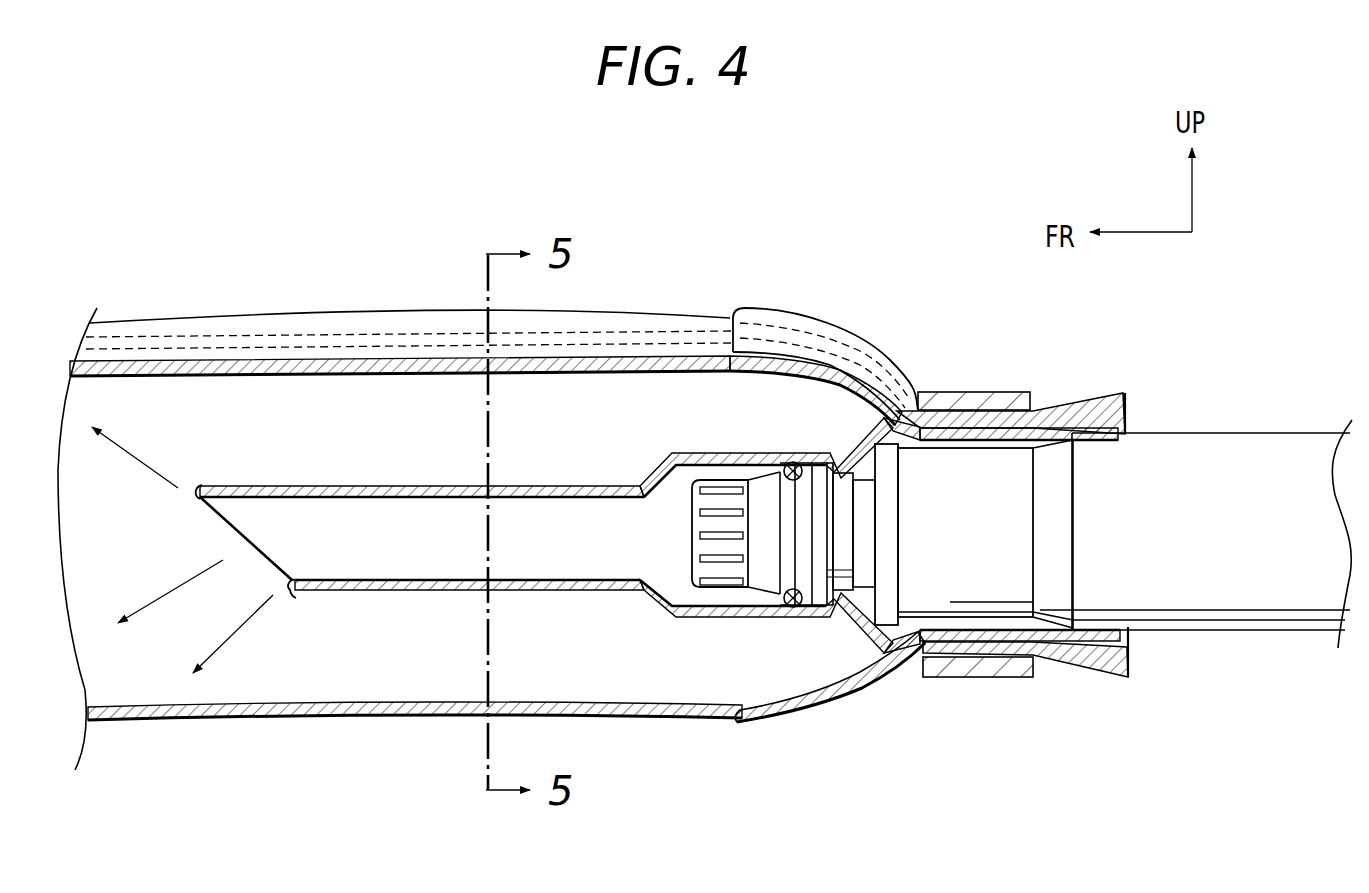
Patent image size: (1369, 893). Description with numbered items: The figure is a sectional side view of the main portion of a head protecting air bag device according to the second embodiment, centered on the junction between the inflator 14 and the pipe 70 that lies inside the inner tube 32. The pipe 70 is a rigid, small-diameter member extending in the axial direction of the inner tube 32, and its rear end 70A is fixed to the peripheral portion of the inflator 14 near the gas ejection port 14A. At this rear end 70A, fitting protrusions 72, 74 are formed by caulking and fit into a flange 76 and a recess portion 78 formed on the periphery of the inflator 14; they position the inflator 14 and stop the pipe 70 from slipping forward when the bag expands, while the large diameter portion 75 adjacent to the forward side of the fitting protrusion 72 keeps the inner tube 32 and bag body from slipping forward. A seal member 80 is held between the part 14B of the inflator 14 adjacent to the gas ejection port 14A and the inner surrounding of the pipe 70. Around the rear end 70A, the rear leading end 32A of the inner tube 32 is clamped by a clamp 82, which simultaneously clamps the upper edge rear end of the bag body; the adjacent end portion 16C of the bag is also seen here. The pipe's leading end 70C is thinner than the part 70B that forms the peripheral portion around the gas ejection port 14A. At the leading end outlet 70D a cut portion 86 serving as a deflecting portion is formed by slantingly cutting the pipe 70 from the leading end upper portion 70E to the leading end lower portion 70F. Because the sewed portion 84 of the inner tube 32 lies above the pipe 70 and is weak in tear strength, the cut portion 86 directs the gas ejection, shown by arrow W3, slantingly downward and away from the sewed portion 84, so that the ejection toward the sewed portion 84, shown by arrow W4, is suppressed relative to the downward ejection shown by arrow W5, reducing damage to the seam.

The inner tube 32 is at (283, 304).
The sewed portion 84 is at (409, 322).
The recess portion 78 is at (833, 470).
The large diameter portion 75 is at (885, 458).
The flange 76 is at (900, 388).
The clamp 82 is at (988, 390).
The rear leading end of the inner tube 32A is at (1080, 408).
The inflator 14 is at (1240, 431).
The pipe 70 is at (630, 528).
The rear end of the pipe 70A is at (997, 448).
The part of the pipe surrounding the gas ejection port 70B is at (705, 452).
The leading end of the pipe 70C is at (425, 486).
The leading end outlet 70D is at (262, 555).
The leading end upper portion 70E is at (187, 486).
The leading end lower portion 70F is at (300, 600).
The fitting protrusion 72 is at (916, 410).
The fitting protrusion 74 is at (843, 478).
The seal member 80 is at (790, 460).
The gas ejection port 14A is at (720, 537).
The part of the inflator adjacent to the gas ejection port 14B is at (790, 548).
The lower cover end portion 16C is at (850, 690).
The cut portion 86 is at (220, 523).
The arrow W3 is at (153, 604).
The arrow W4 is at (137, 450).
The arrow W5 is at (247, 622).